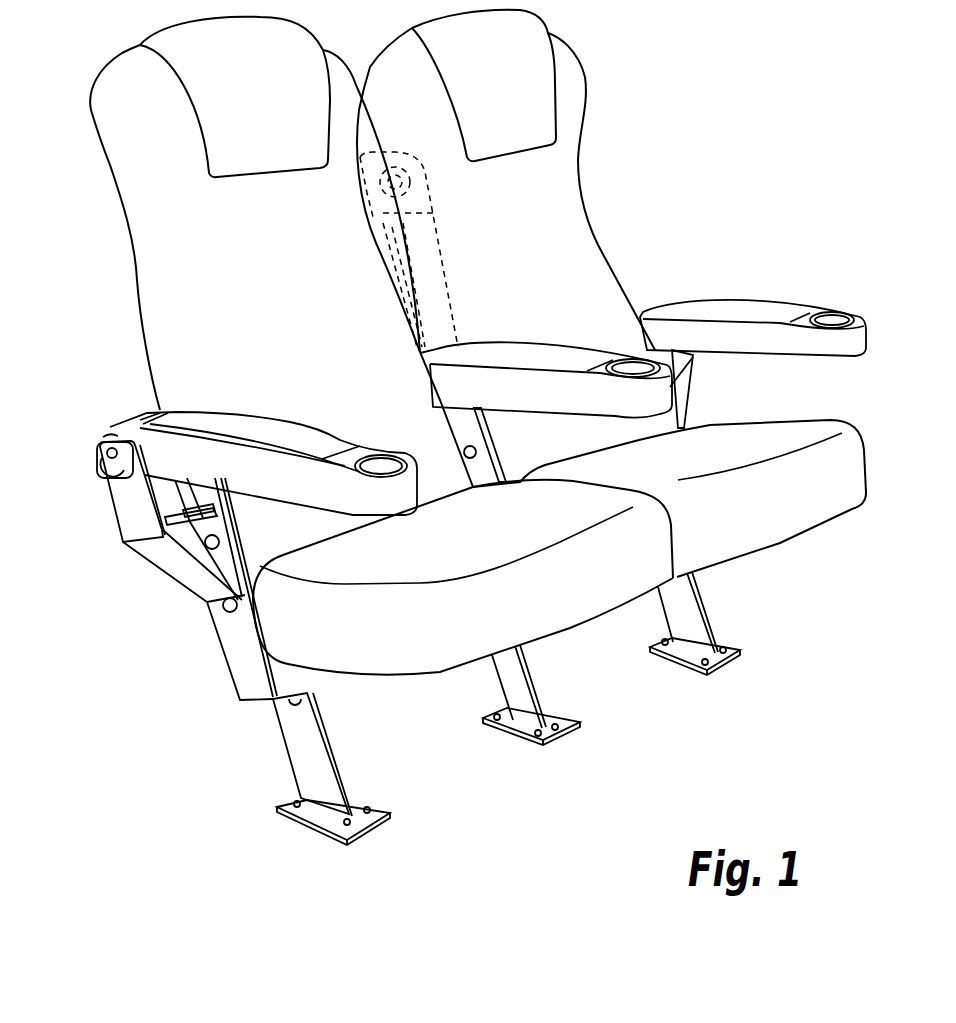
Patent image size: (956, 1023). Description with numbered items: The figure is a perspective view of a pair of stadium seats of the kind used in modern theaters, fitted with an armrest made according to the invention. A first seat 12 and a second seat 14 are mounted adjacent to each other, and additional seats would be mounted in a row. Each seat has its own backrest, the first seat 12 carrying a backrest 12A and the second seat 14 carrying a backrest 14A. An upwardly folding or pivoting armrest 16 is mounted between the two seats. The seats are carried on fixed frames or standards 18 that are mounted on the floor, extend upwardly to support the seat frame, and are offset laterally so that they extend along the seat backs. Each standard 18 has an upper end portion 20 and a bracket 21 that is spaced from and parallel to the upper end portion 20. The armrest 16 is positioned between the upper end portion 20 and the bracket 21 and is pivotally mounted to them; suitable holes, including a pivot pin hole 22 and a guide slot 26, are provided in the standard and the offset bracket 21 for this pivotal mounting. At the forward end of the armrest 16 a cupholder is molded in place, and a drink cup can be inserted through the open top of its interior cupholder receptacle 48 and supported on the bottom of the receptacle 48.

The backrest 12A is at (195, 290).
The backrest 14A is at (571, 188).
The first seat 12 is at (560, 603).
The second seat 14 is at (760, 515).
The armrest 16 is at (420, 163).
The standard 18 is at (322, 748).
The upper end portion 20 is at (460, 420).
The bracket 21 is at (120, 493).
The pivot pin hole 22 is at (107, 437).
The guide slot 26 is at (100, 460).
The cupholder receptacle 48 is at (380, 463).